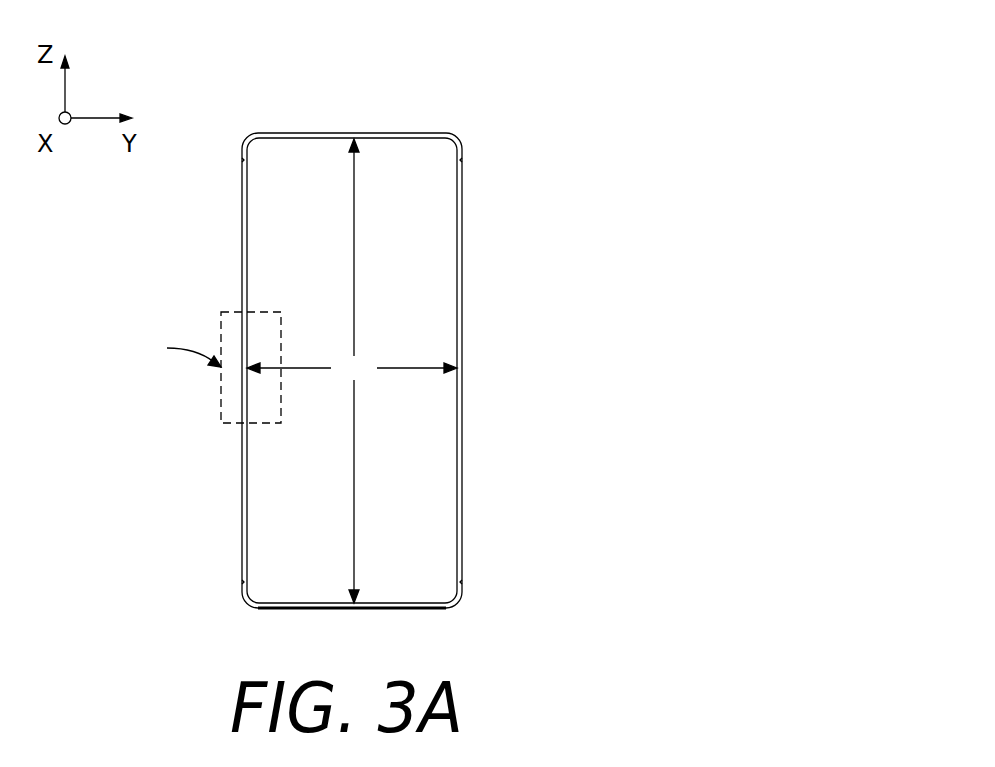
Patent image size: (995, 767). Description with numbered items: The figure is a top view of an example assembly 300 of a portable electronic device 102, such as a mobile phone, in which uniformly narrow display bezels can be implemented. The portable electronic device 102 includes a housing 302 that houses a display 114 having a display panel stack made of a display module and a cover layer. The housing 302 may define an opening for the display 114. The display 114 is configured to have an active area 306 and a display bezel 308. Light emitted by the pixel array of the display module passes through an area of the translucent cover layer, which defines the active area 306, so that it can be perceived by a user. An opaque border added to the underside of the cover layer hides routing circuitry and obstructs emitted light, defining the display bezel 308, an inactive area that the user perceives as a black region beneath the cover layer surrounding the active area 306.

The electronic device 300 is at (589, 55).
The portable electronic device 102 is at (375, 132).
The housing 302 is at (459, 143).
The display 114 is at (435, 305).
The display bezel 308 is at (459, 417).
The active area 306 is at (352, 371).